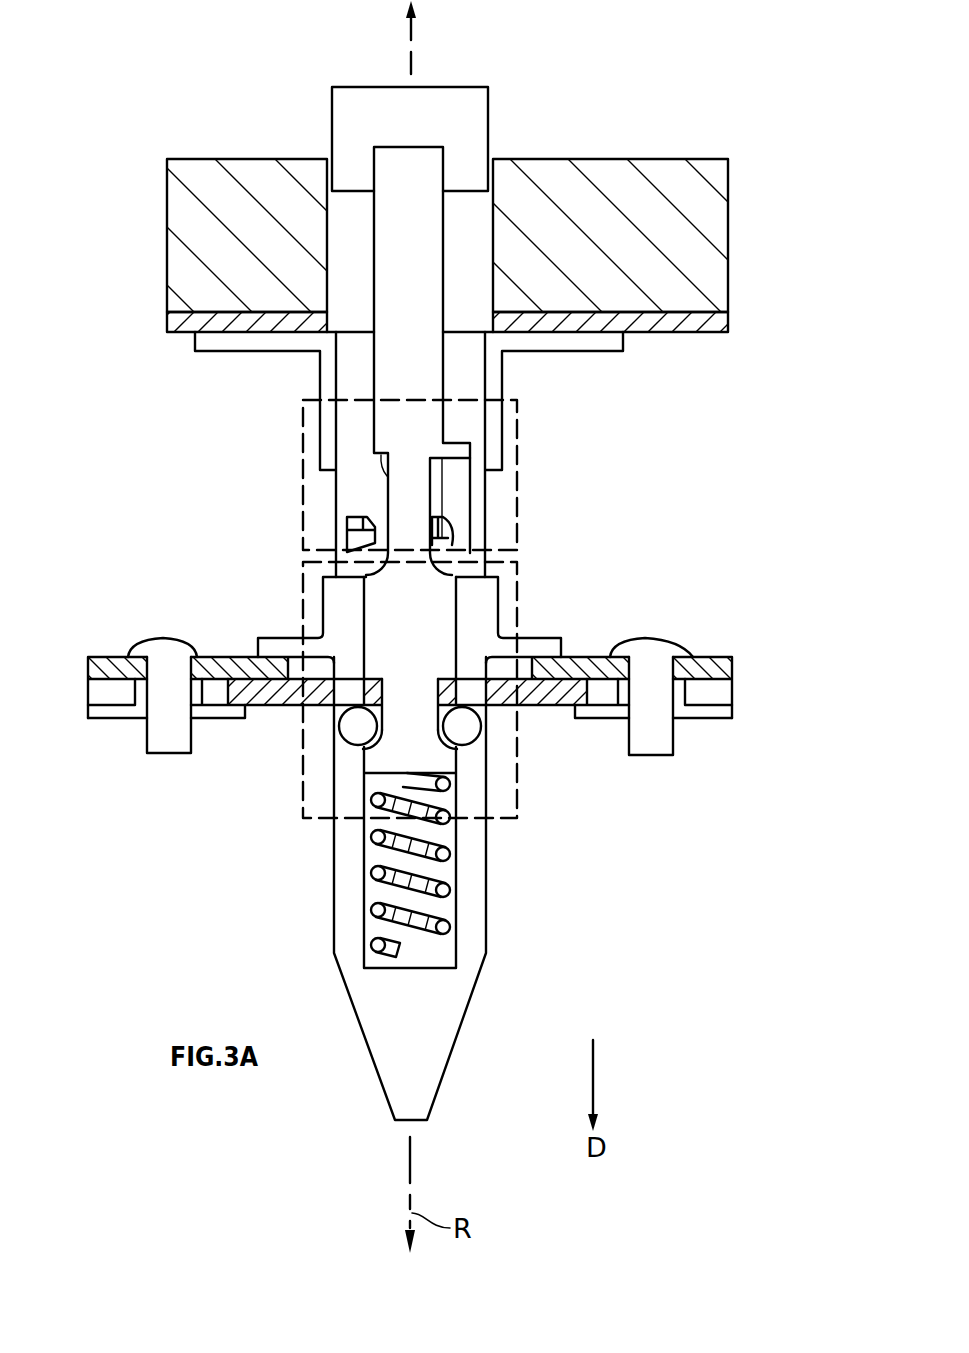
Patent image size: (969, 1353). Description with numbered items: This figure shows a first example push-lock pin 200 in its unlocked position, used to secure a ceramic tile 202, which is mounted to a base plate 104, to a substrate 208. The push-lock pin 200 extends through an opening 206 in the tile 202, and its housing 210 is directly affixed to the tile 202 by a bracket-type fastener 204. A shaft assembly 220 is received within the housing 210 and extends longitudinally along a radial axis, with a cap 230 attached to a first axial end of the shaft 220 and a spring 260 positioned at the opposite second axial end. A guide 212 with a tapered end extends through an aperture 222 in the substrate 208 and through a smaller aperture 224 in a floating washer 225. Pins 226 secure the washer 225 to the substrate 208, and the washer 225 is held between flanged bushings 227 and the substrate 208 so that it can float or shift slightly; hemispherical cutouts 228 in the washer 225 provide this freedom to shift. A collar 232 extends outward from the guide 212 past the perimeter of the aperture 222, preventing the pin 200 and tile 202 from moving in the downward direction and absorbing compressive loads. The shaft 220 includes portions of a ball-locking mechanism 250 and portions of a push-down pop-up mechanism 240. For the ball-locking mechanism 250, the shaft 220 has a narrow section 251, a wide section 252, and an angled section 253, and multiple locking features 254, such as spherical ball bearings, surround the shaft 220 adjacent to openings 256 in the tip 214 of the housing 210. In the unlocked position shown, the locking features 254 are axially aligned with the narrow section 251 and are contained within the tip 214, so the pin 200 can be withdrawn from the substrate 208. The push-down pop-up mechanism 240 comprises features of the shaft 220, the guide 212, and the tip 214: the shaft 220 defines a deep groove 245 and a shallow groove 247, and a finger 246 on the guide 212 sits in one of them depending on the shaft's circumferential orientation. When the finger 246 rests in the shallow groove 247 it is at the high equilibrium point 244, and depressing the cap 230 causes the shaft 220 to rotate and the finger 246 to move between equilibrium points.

The push-lock pin 200 is at (768, 104).
The tile 202 is at (640, 190).
The base plate 104 is at (728, 323).
The fastener 204 is at (588, 338).
The cap 230 is at (476, 96).
The opening 206 is at (472, 220).
The finger 246 is at (457, 447).
The deep groove 245 is at (478, 468).
The push-down pop-up mechanism 240 is at (517, 470).
The high equilibrium point 244 is at (200, 445).
The guide 212 is at (487, 512).
The housing 210 is at (480, 537).
The shallow groove 247 is at (345, 533).
The shaft assembly 220 is at (468, 555).
The tip 214 is at (500, 622).
The pins 226 is at (170, 650).
The cutouts 228 is at (215, 690).
The aperture 222 is at (305, 648).
The flanged bushings 227 is at (105, 720).
The washer 225 is at (250, 707).
The collar 232 is at (563, 643).
The substrate 208 is at (720, 650).
The aperture 224 is at (485, 727).
The wide section 252 is at (333, 723).
The openings 256 is at (322, 744).
The angled section 253 is at (357, 735).
The locking features 254 is at (362, 755).
The ball-locking mechanism 250 is at (518, 778).
The narrow section 251 is at (335, 900).
The spring 260 is at (443, 920).